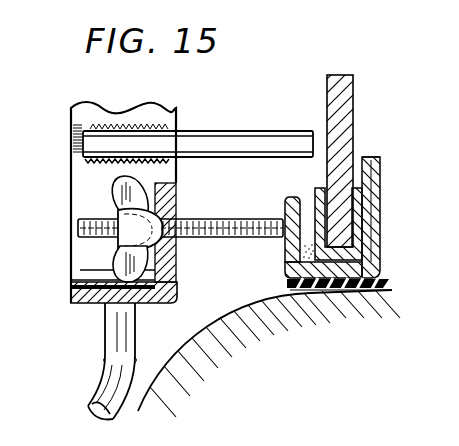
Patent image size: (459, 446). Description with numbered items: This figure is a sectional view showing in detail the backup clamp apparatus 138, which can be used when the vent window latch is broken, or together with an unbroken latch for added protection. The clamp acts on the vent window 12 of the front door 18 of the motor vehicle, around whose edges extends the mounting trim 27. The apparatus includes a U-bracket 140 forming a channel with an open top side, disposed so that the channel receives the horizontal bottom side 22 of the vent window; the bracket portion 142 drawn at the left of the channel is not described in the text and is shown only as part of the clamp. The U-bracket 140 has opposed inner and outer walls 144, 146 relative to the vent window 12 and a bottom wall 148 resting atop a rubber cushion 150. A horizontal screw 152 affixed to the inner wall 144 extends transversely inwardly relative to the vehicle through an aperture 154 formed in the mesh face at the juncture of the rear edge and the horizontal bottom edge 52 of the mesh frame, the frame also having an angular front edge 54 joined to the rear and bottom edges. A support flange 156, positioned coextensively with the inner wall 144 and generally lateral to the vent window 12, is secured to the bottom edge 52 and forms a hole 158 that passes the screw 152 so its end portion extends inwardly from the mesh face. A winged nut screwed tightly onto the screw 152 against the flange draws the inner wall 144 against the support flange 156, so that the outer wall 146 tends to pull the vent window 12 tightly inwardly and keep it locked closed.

The vent window 12 is at (355, 90).
The front door 18 is at (368, 303).
The horizontal bottom side 22 is at (333, 232).
The mounting trim 27 is at (357, 224).
The horizontal bottom edge 52 is at (82, 294).
The angular front edge 54 is at (240, 131).
The backup clamp apparatus 138 is at (366, 139).
The U-bracket 140 is at (381, 169).
The bracket vertical leg 142 is at (303, 196).
The inner wall 144 is at (288, 266).
The outer wall 146 is at (378, 191).
The bottom wall 148 is at (318, 302).
The rubber cushion 150 is at (381, 286).
The horizontal screw 152 is at (257, 220).
The aperture 154 is at (72, 194).
The support flange 156 is at (176, 268).
The hole 158 is at (178, 208).